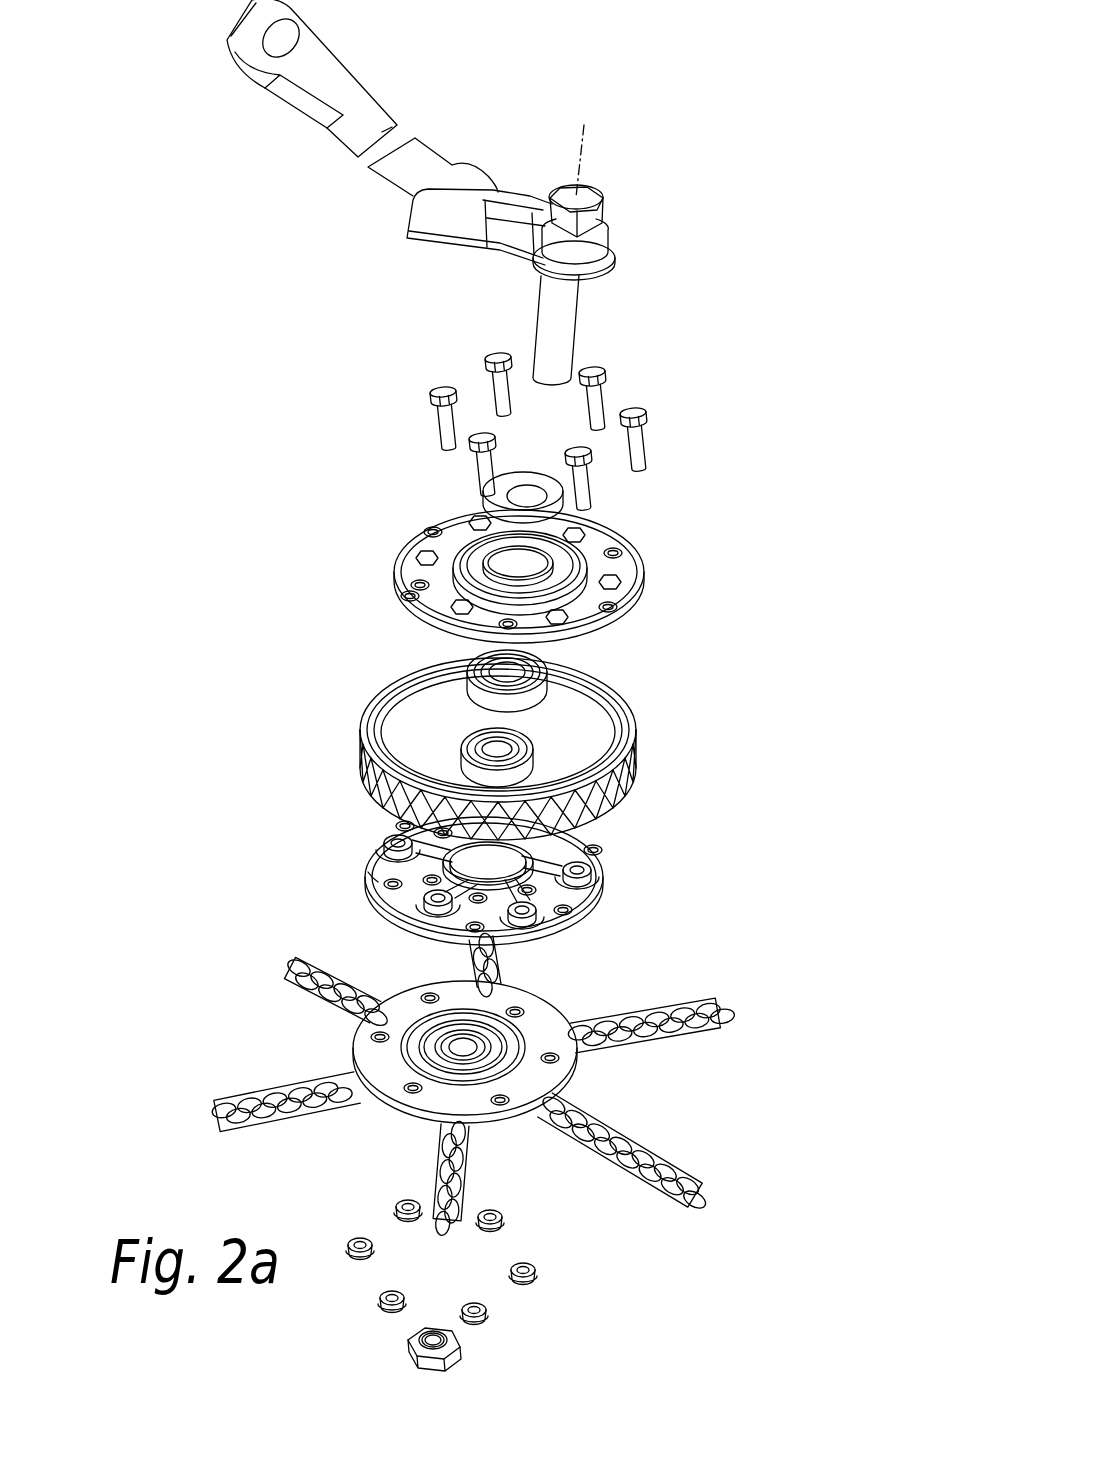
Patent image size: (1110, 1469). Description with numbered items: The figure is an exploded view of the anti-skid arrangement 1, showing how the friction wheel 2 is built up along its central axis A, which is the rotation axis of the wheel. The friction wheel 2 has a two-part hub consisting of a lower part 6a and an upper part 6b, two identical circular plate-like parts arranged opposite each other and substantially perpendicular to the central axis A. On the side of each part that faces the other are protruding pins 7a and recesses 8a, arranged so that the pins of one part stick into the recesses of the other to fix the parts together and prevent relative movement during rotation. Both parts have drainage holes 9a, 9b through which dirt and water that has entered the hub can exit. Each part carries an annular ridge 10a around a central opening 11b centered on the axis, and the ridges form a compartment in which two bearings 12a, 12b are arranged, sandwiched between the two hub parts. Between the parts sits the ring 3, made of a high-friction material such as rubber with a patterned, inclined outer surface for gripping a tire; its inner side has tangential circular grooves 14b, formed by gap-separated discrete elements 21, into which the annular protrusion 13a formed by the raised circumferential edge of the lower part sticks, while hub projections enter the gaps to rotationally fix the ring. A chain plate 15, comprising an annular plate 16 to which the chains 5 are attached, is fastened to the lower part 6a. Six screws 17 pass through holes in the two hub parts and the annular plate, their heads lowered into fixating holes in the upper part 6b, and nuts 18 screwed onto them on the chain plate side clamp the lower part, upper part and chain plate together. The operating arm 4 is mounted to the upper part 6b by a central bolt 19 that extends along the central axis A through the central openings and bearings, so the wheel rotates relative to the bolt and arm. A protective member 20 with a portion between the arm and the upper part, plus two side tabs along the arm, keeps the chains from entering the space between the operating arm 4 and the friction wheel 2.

The anti-skid arrangement 1 is at (740, 396).
The friction wheel 2 is at (712, 645).
The ring 3 is at (482, 735).
The operating arm 4 is at (390, 128).
The chains 5 is at (267, 1116).
The lower part 6a is at (491, 854).
The upper part 6b is at (556, 560).
The protruding pins 7a is at (405, 826).
The recesses 8a is at (540, 862).
The drainage holes 9a is at (372, 878).
The drainage holes 9b is at (410, 600).
The annular ridge 10a is at (540, 886).
The opening 11b is at (547, 563).
The bearing 12a is at (466, 742).
The bearing 12b is at (563, 710).
The protrusion 13a is at (600, 858).
The grooves 14b is at (612, 713).
The chain plate 15 is at (676, 1097).
The annular plate 16 is at (418, 1112).
The screws 17 is at (436, 430).
The nuts 18 is at (530, 1277).
The central bolt 19 is at (556, 312).
The protective member 20 is at (437, 246).
The discrete elements 21 is at (525, 703).
The central axis A is at (581, 158).